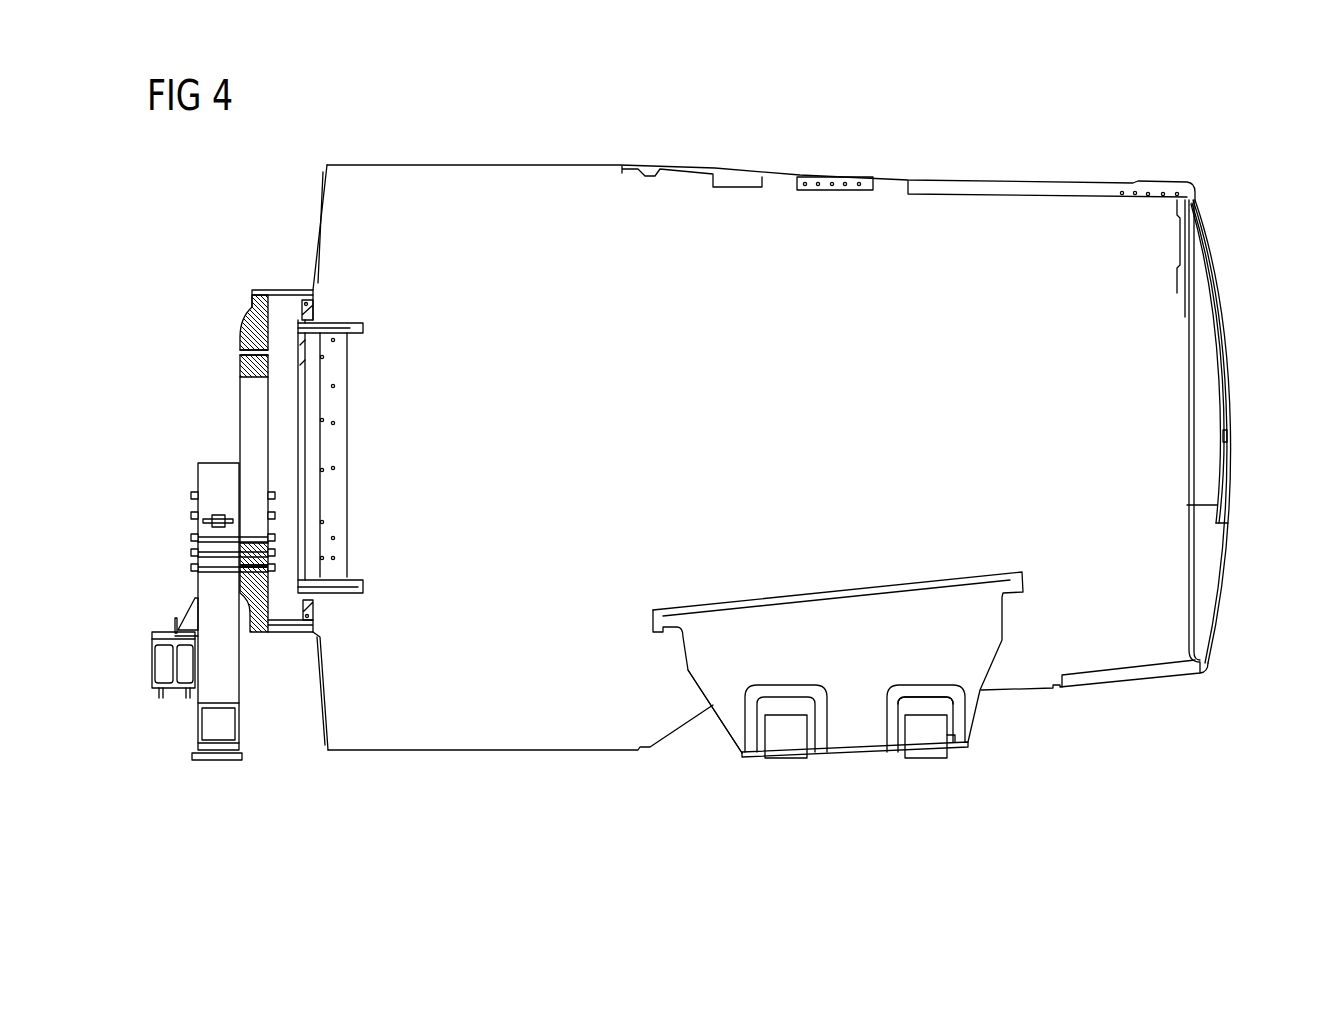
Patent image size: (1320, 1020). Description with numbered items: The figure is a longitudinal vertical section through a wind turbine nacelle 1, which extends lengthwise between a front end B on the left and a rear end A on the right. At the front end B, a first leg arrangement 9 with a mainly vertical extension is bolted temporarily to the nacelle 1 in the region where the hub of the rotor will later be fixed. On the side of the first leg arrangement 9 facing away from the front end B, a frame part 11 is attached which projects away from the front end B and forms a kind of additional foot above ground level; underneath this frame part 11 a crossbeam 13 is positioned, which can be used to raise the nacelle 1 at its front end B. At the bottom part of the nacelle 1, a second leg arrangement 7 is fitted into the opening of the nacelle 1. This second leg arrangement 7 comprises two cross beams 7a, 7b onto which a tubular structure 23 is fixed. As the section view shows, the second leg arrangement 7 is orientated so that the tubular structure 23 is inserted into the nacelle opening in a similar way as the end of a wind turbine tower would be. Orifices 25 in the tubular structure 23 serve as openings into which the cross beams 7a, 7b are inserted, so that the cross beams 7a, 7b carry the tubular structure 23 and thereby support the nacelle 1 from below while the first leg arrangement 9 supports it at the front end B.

The wind turbine nacelle 1 is at (792, 150).
The second leg arrangement 7 is at (852, 698).
The cross beam 7a is at (927, 750).
The cross beam 7b is at (785, 750).
The first leg arrangement 9 is at (208, 479).
The frame part 11 is at (190, 620).
The crossbeam 13 is at (173, 690).
The tubular structure 23 is at (733, 692).
The orifices 25 is at (927, 707).
The rear end A is at (1243, 244).
The front end B is at (279, 229).